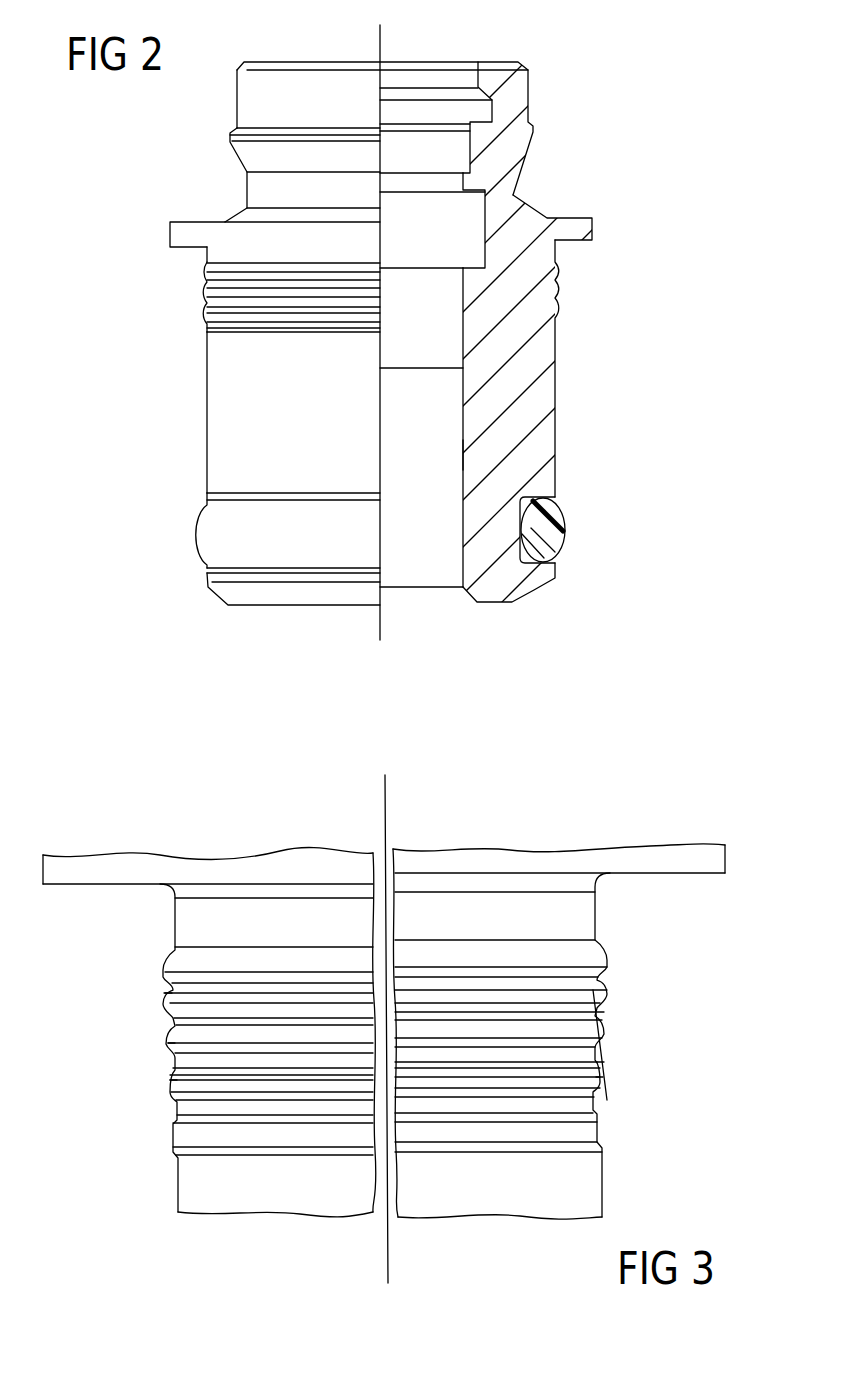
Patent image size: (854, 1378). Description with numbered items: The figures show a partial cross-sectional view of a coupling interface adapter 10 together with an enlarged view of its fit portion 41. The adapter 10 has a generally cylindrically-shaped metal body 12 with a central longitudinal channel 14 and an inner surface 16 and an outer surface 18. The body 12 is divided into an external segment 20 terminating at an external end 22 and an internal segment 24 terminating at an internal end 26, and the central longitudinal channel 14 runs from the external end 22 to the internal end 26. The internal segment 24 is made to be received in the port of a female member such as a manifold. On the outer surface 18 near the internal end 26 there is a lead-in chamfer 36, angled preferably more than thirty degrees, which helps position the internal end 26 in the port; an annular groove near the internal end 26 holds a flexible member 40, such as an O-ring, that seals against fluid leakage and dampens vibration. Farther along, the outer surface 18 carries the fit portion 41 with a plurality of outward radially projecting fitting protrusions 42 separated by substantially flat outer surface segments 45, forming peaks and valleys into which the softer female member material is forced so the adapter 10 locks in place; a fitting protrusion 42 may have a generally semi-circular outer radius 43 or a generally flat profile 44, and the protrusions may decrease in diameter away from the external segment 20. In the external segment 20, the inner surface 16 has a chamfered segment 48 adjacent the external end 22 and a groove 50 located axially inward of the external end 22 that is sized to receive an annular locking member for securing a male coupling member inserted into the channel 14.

In FIG. 2, the coupling interface adapter 10 is at (572, 84).
In FIG. 2, the body 12 is at (575, 377).
In FIG. 2, the central longitudinal channel 14 is at (434, 434).
In FIG. 2, the inner surface 16 is at (470, 140).
In FIG. 2, the outer surface 18 is at (557, 404).
In FIG. 2, the external segment 20 is at (247, 103).
In FIG. 2, the external end 22 is at (258, 62).
In FIG. 2, the internal segment 24 is at (212, 416).
In FIG. 2, the internal end 26 is at (253, 606).
In FIG. 2, the lead-in chamfer 36 is at (545, 589).
In FIG. 2, the flexible member 40 is at (551, 540).
In FIG. 2, the fit portion 41 is at (195, 303).
In FIG. 3, the fit portion 41 is at (638, 1038).
In FIG. 2, the fitting protrusion 42 is at (557, 266).
In FIG. 3, the fitting protrusion 42 is at (172, 1032).
In FIG. 3, the semi-circular outer radius 43 is at (604, 1018).
In FIG. 3, the flat profile 44 is at (170, 1082).
In FIG. 3, the flat outer surface segment 45 is at (172, 1010).
In FIG. 2, the chamfered segment 48 is at (478, 78).
In FIG. 2, the groove 50 is at (490, 117).